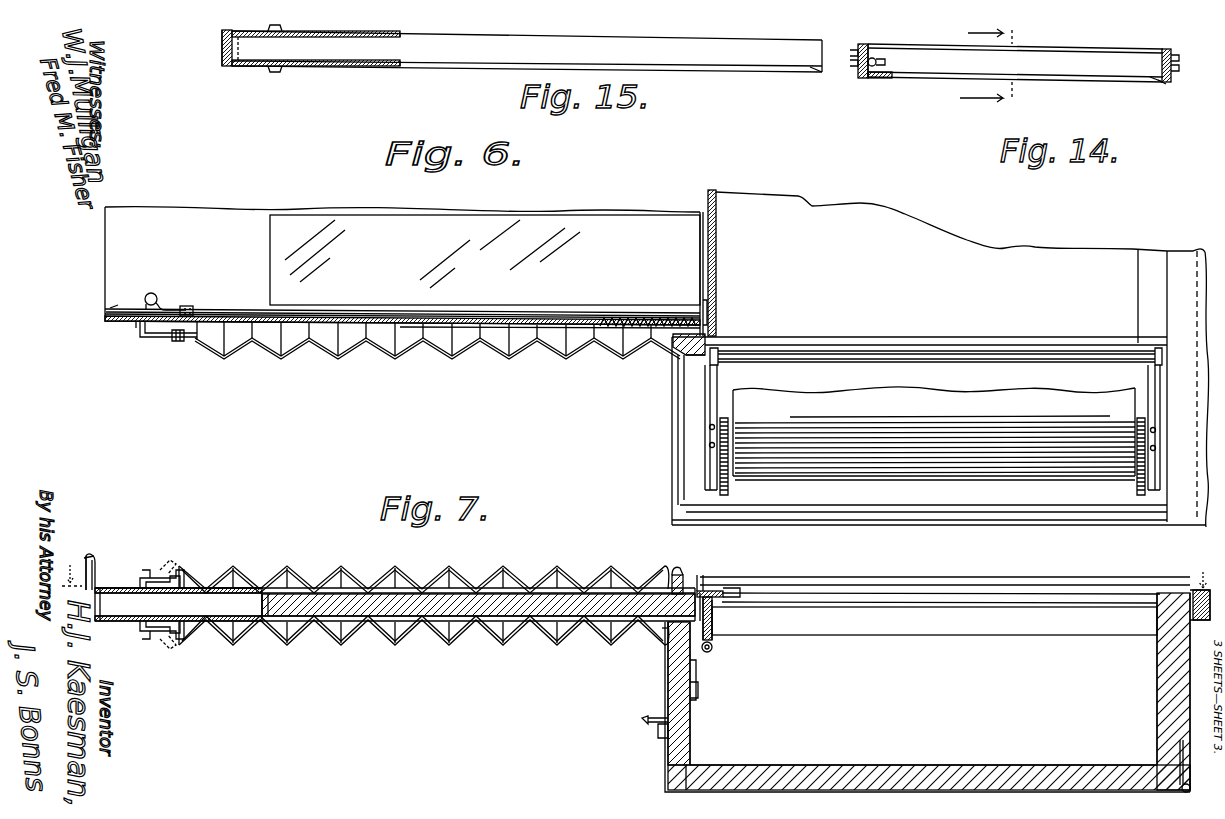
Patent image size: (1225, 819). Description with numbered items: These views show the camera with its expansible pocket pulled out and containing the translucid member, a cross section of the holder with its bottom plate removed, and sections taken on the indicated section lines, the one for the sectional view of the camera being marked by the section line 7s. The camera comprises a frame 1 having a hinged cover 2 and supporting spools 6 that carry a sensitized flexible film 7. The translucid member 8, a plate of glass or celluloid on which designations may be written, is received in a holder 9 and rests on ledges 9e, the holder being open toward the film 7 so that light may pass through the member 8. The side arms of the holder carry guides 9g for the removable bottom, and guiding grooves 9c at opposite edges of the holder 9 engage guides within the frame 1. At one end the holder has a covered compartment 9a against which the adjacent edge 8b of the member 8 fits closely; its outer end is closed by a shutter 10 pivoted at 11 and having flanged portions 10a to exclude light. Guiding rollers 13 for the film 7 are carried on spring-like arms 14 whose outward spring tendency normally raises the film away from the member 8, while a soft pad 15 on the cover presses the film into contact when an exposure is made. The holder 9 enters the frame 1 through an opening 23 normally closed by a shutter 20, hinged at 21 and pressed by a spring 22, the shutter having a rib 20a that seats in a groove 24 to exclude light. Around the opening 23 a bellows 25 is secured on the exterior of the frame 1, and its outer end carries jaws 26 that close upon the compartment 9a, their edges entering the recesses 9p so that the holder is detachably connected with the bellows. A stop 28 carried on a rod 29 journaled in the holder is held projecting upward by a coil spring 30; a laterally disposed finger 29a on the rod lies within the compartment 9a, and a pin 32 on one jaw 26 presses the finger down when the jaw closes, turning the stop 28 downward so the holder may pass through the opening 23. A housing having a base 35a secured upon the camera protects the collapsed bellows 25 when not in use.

In FIG. 6, the frame 1 is at (1162, 470).
In FIG. 7, the frame 1 is at (1190, 650).
In FIG. 7, the cover 2 is at (744, 790).
In FIG. 6, the spools 6 is at (934, 484).
In FIG. 6, the flexible film 7 is at (934, 431).
In FIG. 6, the section line 7 7s is at (1209, 278).
In FIG. 6, the translucid member 8 is at (485, 260).
In FIG. 7, the translucid member 8 is at (524, 592).
In FIG. 7, the adjacent edge of member 8b is at (270, 596).
In FIG. 15, the holder 9 is at (822, 42).
In FIG. 14, the holder 9 is at (1165, 48).
In FIG. 6, the holder 9 is at (616, 350).
In FIG. 7, the holder 9 is at (300, 628).
In FIG. 15, the compartment 9a is at (362, 62).
In FIG. 14, the compartment 9a is at (1100, 48).
In FIG. 6, the compartment 9a is at (402, 298).
In FIG. 7, the compartment 9a is at (232, 592).
In FIG. 14, the guiding grooves 9c is at (856, 78).
In FIG. 15, the ledges 9e is at (814, 73).
In FIG. 14, the ledges 9e is at (1166, 82).
In FIG. 14, the guides 9g is at (1174, 82).
In FIG. 15, the grooved members or recesses 9p is at (285, 49).
In FIG. 6, the grooved members or recesses 9p is at (134, 334).
In FIG. 7, the grooved members or recesses 9p is at (140, 580).
In FIG. 15, the shutter 10 is at (216, 47).
In FIG. 7, the shutter 10 is at (100, 560).
In FIG. 7, the flanged portions 10a is at (82, 560).
In FIG. 15, the pivot 11 is at (224, 30).
In FIG. 7, the pivot 11 is at (98, 588).
In FIG. 6, the guiding rollers 13 is at (884, 358).
In FIG. 6, the spring-like arms 14 is at (712, 390).
In FIG. 14, the pad 15 is at (1002, 66).
In FIG. 7, the shutter 20 is at (720, 608).
In FIG. 7, the rib 20a is at (716, 590).
In FIG. 7, the hinge 21 is at (713, 650).
In FIG. 7, the spring 22 is at (702, 666).
In FIG. 7, the opening 23 is at (670, 654).
In FIG. 7, the groove 24 is at (680, 574).
In FIG. 6, the bellows 25 is at (388, 360).
In FIG. 7, the bellows 25 is at (432, 580).
In FIG. 6, the jaws 26 is at (180, 352).
In FIG. 7, the jaws 26 is at (152, 578).
In FIG. 6, the stop 28 is at (716, 306).
In FIG. 14, the rod 29 is at (876, 60).
In FIG. 6, the rod 29 is at (532, 312).
In FIG. 14, the finger 29a is at (890, 59).
In FIG. 6, the finger 29a is at (154, 291).
In FIG. 6, the coil spring 30 is at (640, 317).
In FIG. 6, the pin 32 is at (120, 299).
In FIG. 7, the base 35a is at (652, 718).